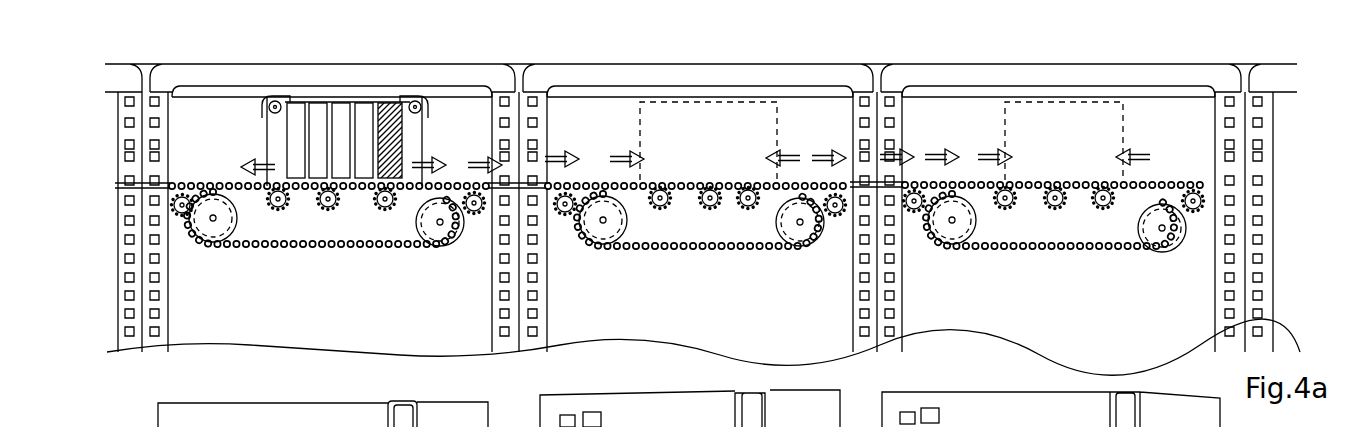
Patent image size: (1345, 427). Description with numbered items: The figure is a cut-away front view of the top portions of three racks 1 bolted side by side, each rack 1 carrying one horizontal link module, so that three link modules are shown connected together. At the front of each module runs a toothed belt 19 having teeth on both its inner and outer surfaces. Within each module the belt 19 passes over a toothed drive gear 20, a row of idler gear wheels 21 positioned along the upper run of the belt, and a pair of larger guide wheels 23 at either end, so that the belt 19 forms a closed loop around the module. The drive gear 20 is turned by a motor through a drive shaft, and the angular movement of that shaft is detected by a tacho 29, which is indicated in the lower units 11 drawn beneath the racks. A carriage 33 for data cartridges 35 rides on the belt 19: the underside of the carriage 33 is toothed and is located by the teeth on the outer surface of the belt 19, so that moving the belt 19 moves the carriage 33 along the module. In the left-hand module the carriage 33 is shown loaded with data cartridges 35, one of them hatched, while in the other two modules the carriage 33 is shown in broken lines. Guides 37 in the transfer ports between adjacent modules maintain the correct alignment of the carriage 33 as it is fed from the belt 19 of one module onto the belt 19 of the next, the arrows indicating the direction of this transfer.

The rack 1 is at (306, 73).
The drawer unit 11 is at (1138, 398).
The toothed belt 19 is at (206, 184).
The toothed drive gear 20 is at (190, 222).
The idler gear wheels 21 is at (1108, 226).
The guide wheels 23 is at (225, 240).
The tacho 29 is at (970, 417).
The carriage 33 is at (268, 112).
The data cartridges 35 is at (388, 108).
The guides 37 is at (132, 190).